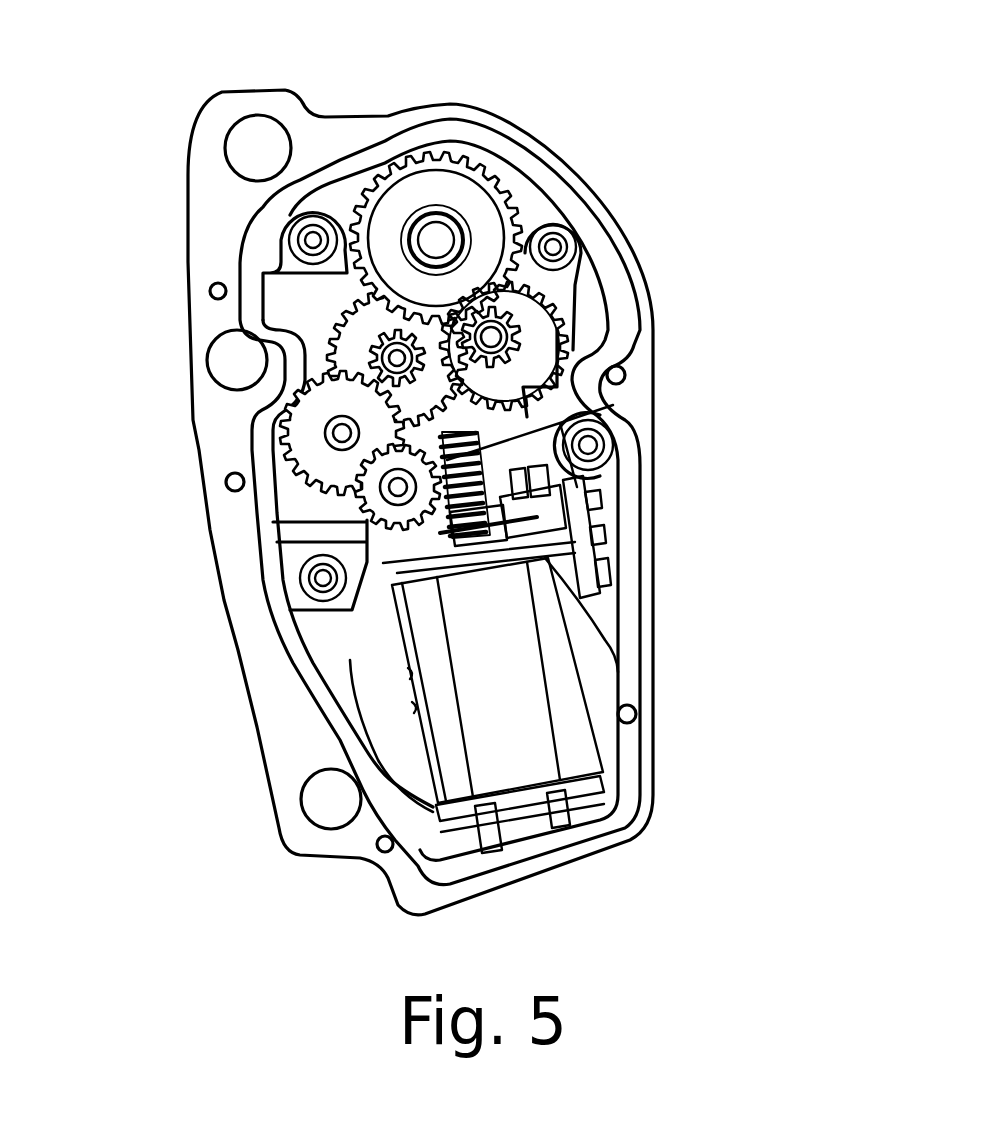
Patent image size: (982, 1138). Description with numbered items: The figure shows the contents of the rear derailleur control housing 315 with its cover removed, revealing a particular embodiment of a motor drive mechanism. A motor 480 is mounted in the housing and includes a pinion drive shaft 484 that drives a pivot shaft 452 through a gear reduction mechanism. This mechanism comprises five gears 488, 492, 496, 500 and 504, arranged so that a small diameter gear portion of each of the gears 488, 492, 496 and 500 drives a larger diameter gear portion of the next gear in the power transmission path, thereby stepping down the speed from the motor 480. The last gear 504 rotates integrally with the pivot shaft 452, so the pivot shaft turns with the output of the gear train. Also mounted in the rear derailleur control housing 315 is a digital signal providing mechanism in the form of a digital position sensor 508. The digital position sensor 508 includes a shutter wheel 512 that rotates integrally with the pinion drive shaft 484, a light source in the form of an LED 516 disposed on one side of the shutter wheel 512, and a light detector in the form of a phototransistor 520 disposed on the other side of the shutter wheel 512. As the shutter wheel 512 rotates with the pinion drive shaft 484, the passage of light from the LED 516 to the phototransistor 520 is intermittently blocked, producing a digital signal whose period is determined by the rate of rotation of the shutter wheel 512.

The rear derailleur control housing 315 is at (193, 422).
The pivot shaft 452 is at (436, 247).
The motor 480 is at (523, 687).
The pinion drive shaft 484 is at (480, 447).
The gear 488 is at (386, 488).
The gear 492 is at (335, 444).
The gear 496 is at (365, 332).
The gear 500 is at (545, 312).
The gear 504 is at (424, 186).
The digital position sensor 508 is at (510, 574).
The shutter wheel 512 is at (515, 521).
The LED 516 is at (548, 500).
The phototransistor 520 is at (578, 594).